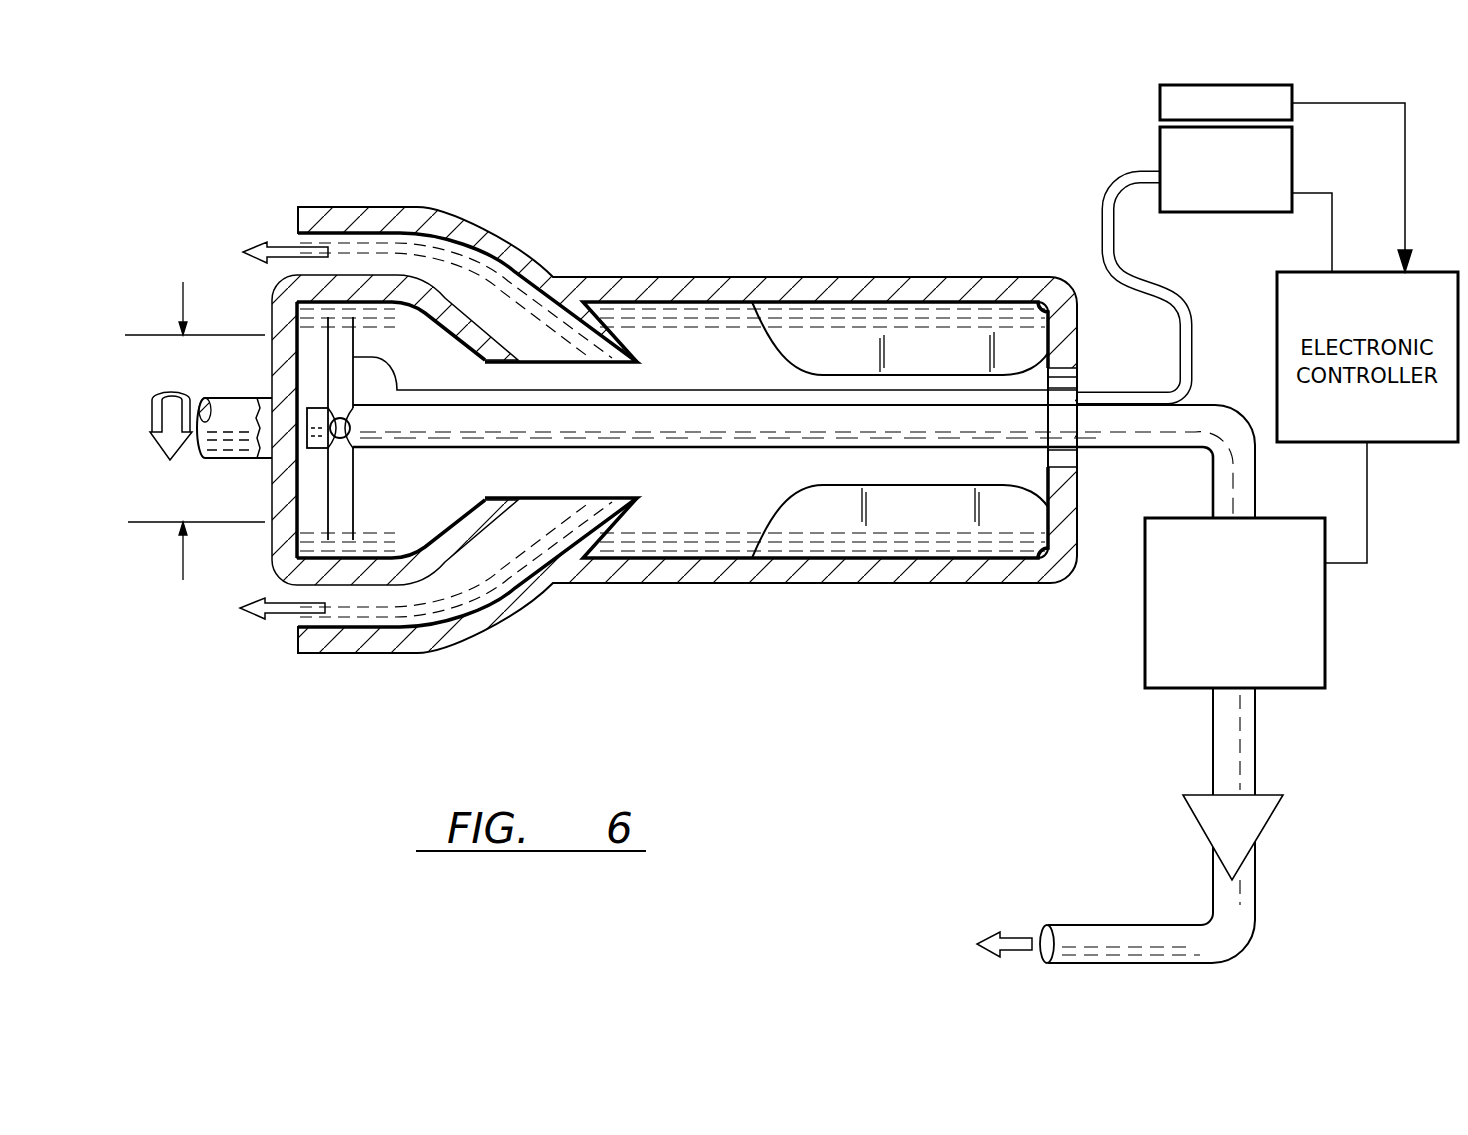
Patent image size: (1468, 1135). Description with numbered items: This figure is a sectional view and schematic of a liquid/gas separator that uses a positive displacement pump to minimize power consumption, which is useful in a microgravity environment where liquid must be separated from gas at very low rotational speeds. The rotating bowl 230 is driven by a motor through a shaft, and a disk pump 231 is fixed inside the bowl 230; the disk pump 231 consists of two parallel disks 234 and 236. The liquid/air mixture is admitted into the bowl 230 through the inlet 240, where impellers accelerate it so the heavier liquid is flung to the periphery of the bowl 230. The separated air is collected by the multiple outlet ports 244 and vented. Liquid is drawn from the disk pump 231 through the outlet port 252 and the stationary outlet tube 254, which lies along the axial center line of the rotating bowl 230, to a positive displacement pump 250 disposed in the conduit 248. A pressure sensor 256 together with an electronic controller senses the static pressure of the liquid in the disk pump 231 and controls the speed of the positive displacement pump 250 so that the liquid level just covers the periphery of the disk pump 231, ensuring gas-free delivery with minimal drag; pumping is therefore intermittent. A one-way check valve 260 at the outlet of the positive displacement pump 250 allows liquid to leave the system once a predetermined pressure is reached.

The rotating bowl 230 is at (706, 585).
The disk pump 231 is at (343, 505).
The parallel disk 234 is at (354, 494).
The parallel disk 236 is at (322, 500).
The inlet 240 is at (1079, 374).
The multiple outlet ports 244 is at (503, 350).
The conduit 248 is at (1210, 738).
The positive displacement pump 250 is at (1326, 664).
The outlet port 252 is at (317, 407).
The stationary outlet tube 254 is at (703, 449).
The pressure sensor 256 is at (1160, 143).
The one-way check valve 260 is at (1212, 845).